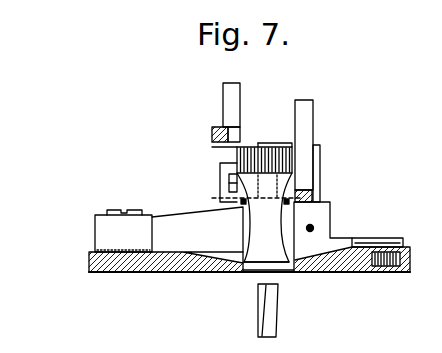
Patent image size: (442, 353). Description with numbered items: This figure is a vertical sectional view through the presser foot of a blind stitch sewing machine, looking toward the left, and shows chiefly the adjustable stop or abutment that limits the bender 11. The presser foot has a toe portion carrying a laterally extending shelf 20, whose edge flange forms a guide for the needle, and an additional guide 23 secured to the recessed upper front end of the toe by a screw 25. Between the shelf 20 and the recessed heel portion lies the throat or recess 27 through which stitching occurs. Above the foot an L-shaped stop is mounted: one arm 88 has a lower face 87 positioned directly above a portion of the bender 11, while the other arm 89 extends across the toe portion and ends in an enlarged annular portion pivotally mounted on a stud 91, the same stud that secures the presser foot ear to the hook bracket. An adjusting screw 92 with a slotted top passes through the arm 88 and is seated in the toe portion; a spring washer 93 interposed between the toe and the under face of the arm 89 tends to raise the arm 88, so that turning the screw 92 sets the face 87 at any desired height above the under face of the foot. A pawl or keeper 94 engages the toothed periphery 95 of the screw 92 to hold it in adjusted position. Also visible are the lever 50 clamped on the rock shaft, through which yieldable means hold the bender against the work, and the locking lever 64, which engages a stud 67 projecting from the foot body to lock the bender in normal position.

The bender 11 is at (272, 318).
The shelf 20 is at (195, 274).
The additional guide 23 is at (124, 250).
The screw 25 is at (136, 209).
The throat or recess 27 is at (257, 267).
The lever 50 is at (218, 127).
The locking lever 64 is at (308, 197).
The stud 67 is at (326, 202).
The lower face of stop arm 87 is at (252, 265).
The stop arm 88 is at (263, 216).
The arm of abutment 89 is at (231, 180).
The stud 91 is at (220, 167).
The adjusting screw 92 is at (281, 147).
The spring washer 93 is at (212, 198).
The pawl or keeper 94 is at (237, 151).
The toothed periphery 95 is at (296, 156).